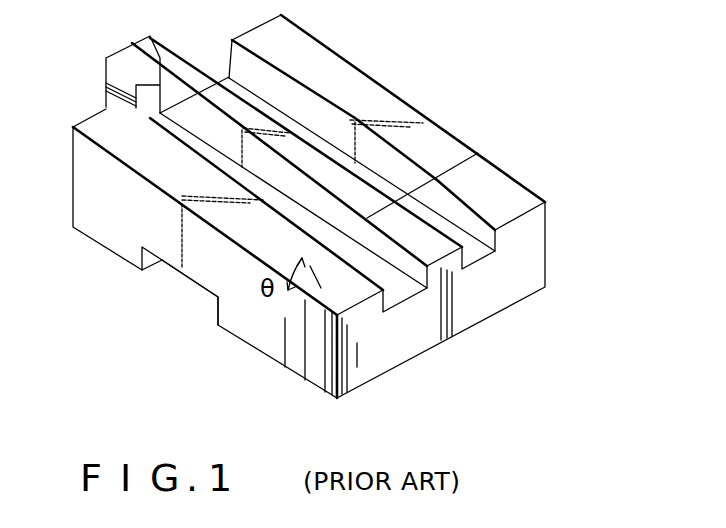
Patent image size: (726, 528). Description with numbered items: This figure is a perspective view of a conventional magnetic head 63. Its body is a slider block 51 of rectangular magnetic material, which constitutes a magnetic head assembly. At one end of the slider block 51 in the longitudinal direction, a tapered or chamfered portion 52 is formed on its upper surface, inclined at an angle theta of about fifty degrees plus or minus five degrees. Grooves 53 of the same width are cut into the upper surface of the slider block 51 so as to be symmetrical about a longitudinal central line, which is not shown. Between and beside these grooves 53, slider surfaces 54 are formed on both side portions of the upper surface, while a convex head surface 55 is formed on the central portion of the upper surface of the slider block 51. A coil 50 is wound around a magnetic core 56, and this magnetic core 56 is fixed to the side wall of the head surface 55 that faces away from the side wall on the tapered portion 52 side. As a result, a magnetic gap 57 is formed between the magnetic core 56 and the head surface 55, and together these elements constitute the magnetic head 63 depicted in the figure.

The coil 50 is at (117, 62).
The slider block 51 is at (107, 230).
The tapered portion 52 is at (512, 190).
The grooves 53 is at (407, 307).
The slider surfaces 54 is at (102, 125).
The convex head surface 55 is at (206, 80).
The magnetic core 56 is at (122, 48).
The magnetic gap 57 is at (183, 62).
The magnetic head 63 is at (163, 292).